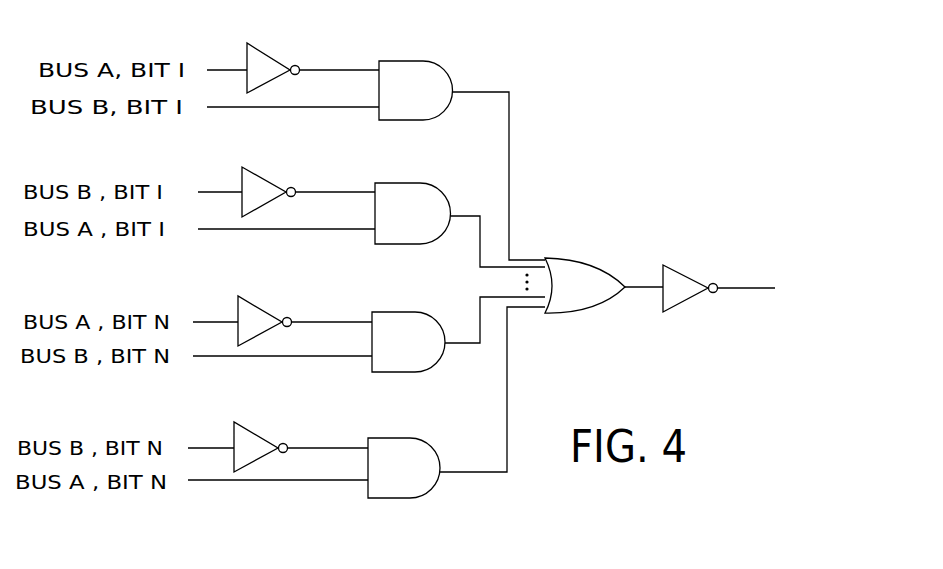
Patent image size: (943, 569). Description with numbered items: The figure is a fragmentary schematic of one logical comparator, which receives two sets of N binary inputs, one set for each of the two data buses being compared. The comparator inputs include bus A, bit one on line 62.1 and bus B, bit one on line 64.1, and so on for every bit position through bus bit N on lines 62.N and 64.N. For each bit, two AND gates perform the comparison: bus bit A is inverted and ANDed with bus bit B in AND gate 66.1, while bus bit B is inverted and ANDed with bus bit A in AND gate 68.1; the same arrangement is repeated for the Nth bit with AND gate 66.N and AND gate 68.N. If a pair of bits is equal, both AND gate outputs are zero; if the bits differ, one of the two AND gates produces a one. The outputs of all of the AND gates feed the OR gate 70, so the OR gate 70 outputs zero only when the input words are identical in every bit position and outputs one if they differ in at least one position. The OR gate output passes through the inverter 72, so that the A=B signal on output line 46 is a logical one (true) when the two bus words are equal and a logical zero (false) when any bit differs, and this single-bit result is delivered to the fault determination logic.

The bus A bit 1 comparator input line 62.1 is at (224, 70).
The bus B bit 1 comparator input line 64.1 is at (292, 108).
The bus A bit N comparator input line 62.N is at (218, 322).
The bus B bit N comparator input line 64.N is at (282, 357).
The AND gate 66.1 is at (422, 61).
The AND gate 68.1 is at (418, 183).
The AND gate 66.N is at (415, 373).
The AND gate 68.N is at (412, 438).
The OR gate 70 is at (576, 258).
The output inverter 72 is at (689, 303).
The A=B output line 46 is at (753, 288).